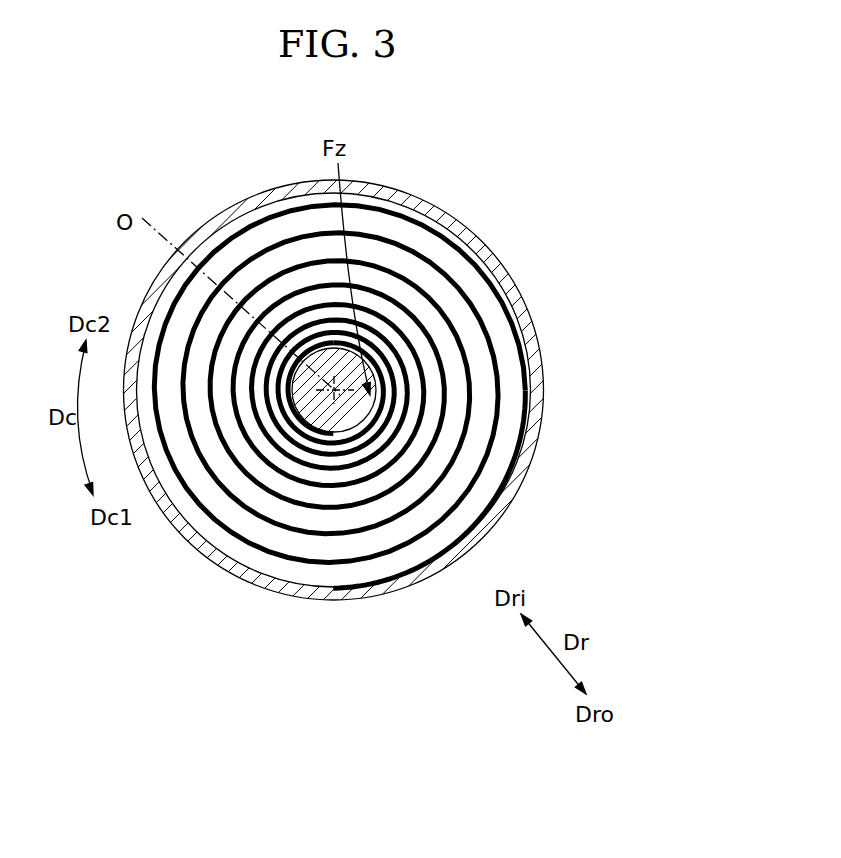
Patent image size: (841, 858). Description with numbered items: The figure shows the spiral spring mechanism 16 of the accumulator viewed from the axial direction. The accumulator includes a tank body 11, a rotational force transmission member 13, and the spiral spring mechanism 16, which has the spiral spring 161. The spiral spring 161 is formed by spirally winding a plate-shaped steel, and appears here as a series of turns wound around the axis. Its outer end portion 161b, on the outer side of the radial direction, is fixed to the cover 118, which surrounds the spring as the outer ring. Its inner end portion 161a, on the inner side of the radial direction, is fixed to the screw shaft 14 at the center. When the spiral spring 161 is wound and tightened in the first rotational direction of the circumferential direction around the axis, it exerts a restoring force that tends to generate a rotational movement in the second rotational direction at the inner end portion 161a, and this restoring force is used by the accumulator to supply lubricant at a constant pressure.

The tank body 11 is at (354, 388).
The cover 118 is at (513, 290).
The rotational force transmission member 13 is at (485, 386).
The screw shaft 14 is at (386, 426).
The spiral spring mechanism 16 is at (408, 432).
The spiral spring 161 is at (408, 466).
The inner end portion 161a is at (336, 440).
The outer end portion 161b is at (351, 593).